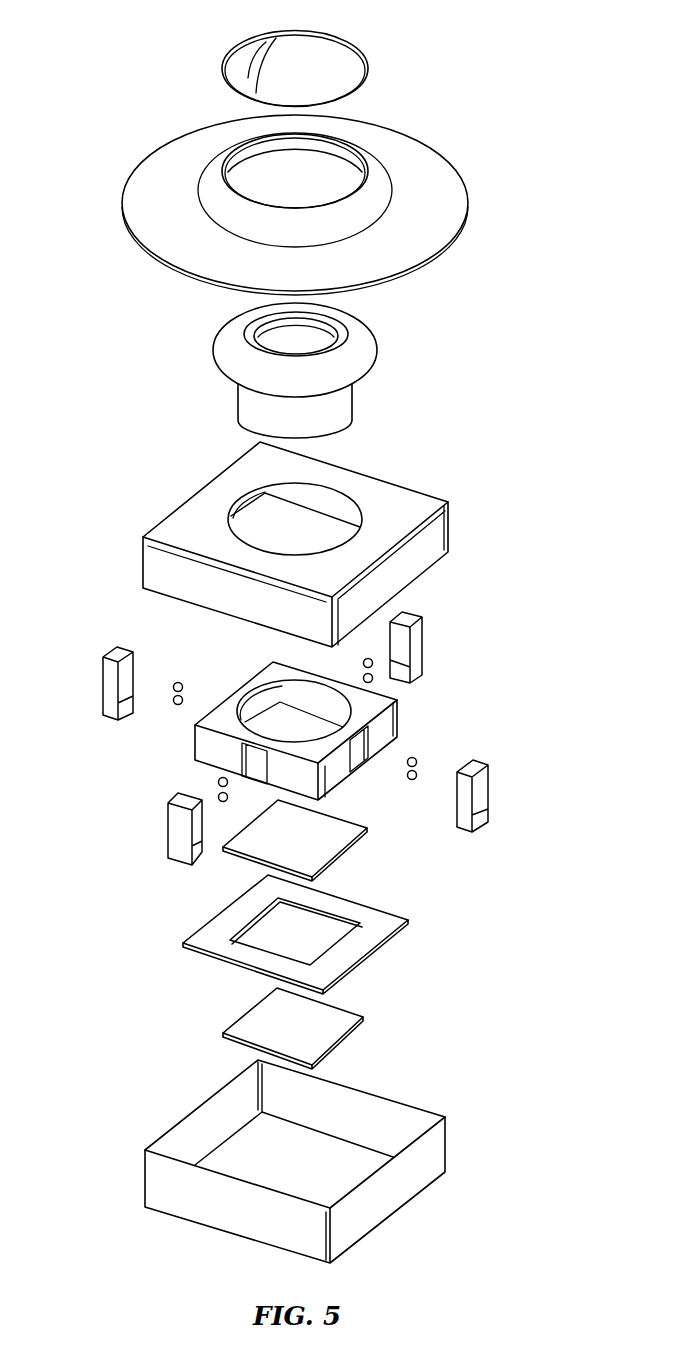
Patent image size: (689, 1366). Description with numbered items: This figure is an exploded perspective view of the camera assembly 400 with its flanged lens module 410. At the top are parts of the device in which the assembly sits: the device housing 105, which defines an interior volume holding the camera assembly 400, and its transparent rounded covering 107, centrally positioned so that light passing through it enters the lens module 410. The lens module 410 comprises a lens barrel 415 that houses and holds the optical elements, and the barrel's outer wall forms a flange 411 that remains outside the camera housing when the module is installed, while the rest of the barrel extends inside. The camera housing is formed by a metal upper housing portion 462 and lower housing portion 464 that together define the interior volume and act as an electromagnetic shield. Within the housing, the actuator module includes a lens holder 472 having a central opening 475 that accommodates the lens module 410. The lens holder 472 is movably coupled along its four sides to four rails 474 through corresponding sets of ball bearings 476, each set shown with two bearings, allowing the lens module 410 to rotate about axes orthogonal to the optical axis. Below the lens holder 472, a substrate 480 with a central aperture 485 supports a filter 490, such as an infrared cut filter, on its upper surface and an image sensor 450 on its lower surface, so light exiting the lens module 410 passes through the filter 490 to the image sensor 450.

The camera assembly 400 is at (143, 51).
The transparent rounded covering 107 is at (367, 66).
The device housing 105 is at (467, 195).
The flanged lens module 410 is at (196, 344).
The flange 411 is at (376, 340).
The lens barrel 415 is at (353, 395).
The upper housing portion 462 is at (450, 530).
The lens holder 472 is at (228, 697).
The central opening 475 is at (302, 716).
The rails 474 is at (102, 684).
The ball bearings 476 is at (178, 682).
The filter 490 is at (370, 826).
The substrate 480 is at (410, 918).
The central aperture 485 is at (314, 927).
The image sensor 450 is at (365, 1015).
The lower housing portion 464 is at (447, 1140).